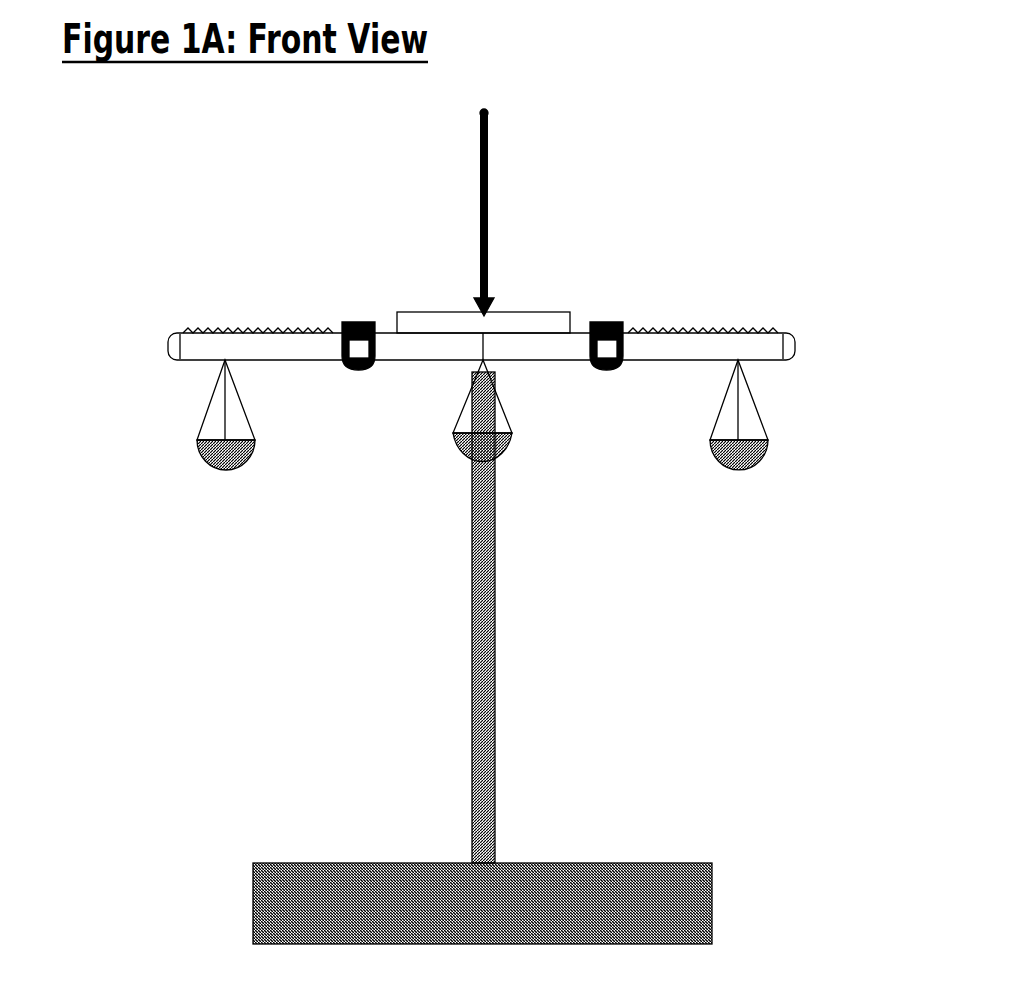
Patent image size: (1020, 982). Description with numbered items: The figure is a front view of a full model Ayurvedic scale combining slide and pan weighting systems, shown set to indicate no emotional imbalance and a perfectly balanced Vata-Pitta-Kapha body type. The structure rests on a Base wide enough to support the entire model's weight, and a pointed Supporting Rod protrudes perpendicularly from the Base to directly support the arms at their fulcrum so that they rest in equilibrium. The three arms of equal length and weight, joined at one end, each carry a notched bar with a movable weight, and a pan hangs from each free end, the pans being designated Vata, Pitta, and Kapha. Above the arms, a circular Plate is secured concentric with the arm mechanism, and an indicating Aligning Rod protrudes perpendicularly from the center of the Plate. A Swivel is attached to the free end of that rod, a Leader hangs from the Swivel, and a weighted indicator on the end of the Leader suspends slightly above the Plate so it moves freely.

The swivel Swivel is at (441, 114).
The indicating rod Aligning Rod is at (520, 148).
The lead Leader is at (441, 218).
The circular plate Plate is at (577, 288).
The supporting rod Supporting Rod is at (535, 772).
The base Base is at (541, 881).